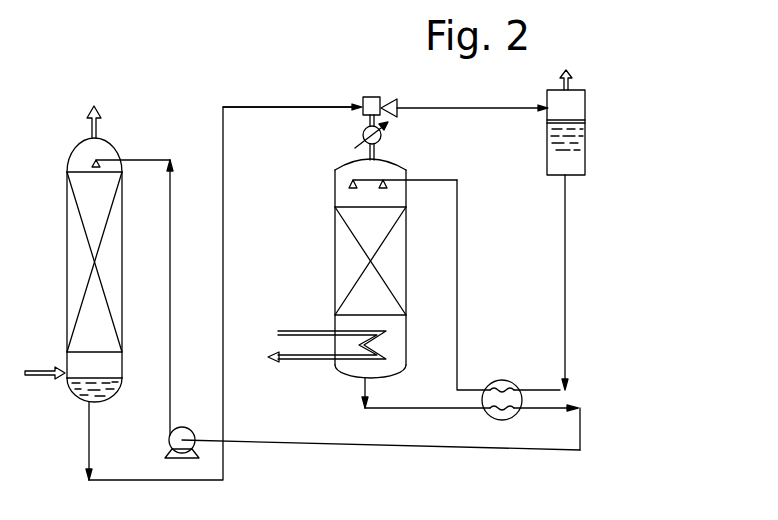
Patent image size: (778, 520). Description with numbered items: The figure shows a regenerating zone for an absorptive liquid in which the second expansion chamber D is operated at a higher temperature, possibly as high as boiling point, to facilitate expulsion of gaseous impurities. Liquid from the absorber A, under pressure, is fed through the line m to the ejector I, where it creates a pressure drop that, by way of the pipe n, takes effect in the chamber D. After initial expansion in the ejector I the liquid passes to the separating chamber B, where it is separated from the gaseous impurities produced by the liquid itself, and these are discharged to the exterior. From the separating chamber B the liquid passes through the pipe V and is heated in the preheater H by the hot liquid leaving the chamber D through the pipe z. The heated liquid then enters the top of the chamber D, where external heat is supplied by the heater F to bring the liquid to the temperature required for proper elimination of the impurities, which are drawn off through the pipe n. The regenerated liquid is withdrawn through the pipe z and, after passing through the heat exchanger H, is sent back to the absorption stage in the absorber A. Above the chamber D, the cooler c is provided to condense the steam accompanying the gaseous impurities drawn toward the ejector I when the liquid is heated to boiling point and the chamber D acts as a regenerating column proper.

The absorber A is at (73, 293).
The separating chamber B is at (577, 122).
The expansion chamber D is at (382, 283).
The external heating means F is at (327, 359).
The preheater H is at (502, 408).
The ejector I is at (380, 90).
The pipe V is at (571, 282).
The cooler c is at (364, 131).
The feed line m is at (291, 95).
The pipe n is at (376, 155).
The pipe z is at (472, 427).